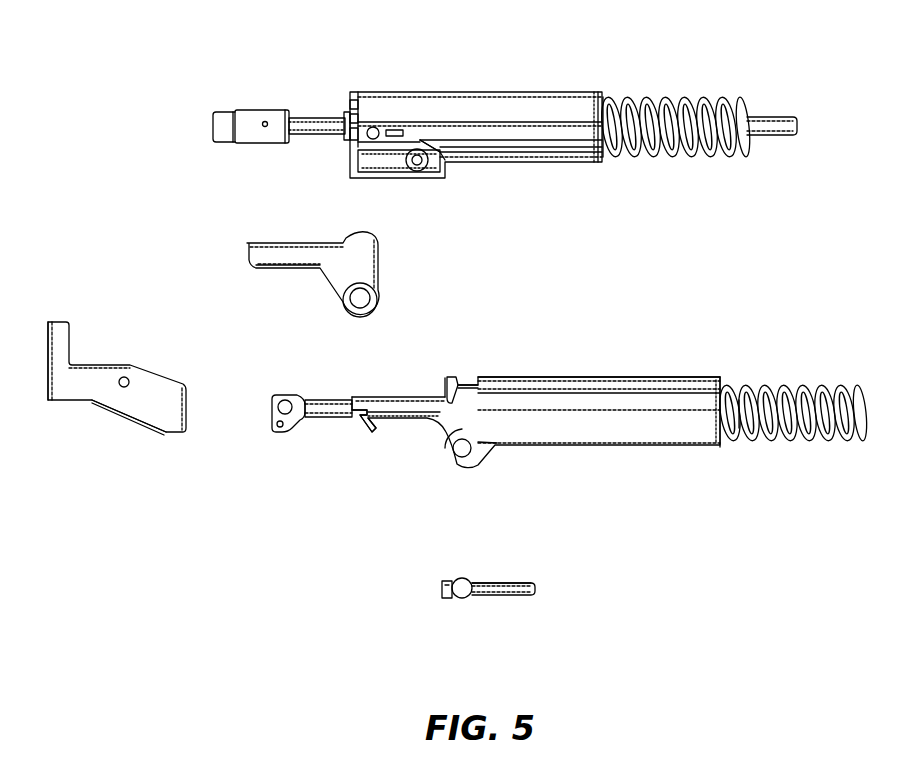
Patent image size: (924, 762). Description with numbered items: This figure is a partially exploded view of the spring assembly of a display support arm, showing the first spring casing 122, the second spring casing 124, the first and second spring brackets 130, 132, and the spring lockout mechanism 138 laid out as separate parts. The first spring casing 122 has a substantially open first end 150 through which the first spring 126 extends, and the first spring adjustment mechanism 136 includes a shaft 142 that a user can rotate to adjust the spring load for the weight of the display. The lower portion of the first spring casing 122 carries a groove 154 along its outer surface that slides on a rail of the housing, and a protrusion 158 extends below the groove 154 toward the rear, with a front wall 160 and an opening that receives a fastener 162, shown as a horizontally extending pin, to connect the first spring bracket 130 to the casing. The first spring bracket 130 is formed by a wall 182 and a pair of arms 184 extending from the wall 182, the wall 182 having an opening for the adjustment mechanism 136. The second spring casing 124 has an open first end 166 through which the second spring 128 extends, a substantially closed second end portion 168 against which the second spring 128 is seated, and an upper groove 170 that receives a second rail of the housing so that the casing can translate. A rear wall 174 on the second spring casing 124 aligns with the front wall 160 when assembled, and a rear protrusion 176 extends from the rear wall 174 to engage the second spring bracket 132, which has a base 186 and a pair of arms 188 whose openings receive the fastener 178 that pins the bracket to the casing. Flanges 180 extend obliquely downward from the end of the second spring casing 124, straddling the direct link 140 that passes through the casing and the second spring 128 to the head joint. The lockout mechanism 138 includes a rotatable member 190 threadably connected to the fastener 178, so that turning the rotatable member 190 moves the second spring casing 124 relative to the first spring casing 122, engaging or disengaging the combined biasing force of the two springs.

The first spring casing 122 is at (495, 84).
The second spring casing 124 is at (633, 462).
The first spring 126 is at (721, 98).
The second spring 128 is at (822, 442).
The first spring bracket 130 is at (88, 449).
The second spring bracket 132 is at (380, 92).
The first spring adjustment mechanism 136 is at (240, 96).
The spring lockout mechanism 138 is at (521, 606).
The direct link 140 is at (742, 440).
The shaft 142 is at (782, 116).
The first end 150 is at (602, 92).
The groove 154 is at (546, 158).
The protrusion 158 is at (368, 176).
The front wall 160 is at (445, 168).
The fastener 162 is at (418, 172).
The first end 166 is at (724, 380).
The second end portion 168 is at (470, 384).
The groove 170 is at (680, 382).
The rear wall 174 is at (445, 388).
The rear protrusion 176 is at (450, 378).
The fastener 178 is at (462, 578).
The flange 180 is at (368, 432).
The wall 182 is at (62, 320).
The arm 184 is at (168, 430).
The base 186 is at (282, 258).
The arm 188 is at (380, 265).
The rotatable member 190 is at (519, 582).